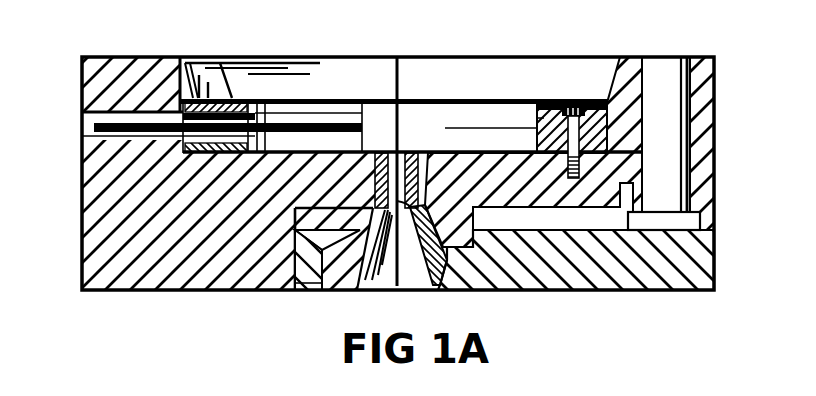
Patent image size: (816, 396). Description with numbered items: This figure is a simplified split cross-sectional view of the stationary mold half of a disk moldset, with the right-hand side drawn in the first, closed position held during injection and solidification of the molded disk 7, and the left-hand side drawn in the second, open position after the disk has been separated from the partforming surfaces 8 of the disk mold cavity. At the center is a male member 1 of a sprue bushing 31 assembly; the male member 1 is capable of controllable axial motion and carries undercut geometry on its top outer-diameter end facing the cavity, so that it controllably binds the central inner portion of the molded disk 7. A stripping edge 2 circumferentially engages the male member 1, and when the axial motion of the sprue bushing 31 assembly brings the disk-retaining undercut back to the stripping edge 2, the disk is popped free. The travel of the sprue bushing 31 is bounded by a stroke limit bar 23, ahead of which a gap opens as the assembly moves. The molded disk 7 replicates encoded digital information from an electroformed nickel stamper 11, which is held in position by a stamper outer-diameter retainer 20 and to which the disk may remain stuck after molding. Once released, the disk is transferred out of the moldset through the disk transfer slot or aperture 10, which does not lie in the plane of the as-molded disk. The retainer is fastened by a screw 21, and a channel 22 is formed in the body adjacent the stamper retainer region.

The male member 1 is at (420, 150).
The stripping edge 2 is at (365, 150).
The molded disk 7 is at (105, 115).
The partforming surfaces 8 is at (462, 150).
The aperture 10 is at (108, 137).
The stamper 11 is at (300, 150).
The stamper O.D. retainer 20 is at (227, 98).
The screw 21 is at (568, 105).
The channel 22 is at (655, 70).
The stroke limit bar 23 is at (685, 246).
The sprue bushing 31 is at (470, 291).